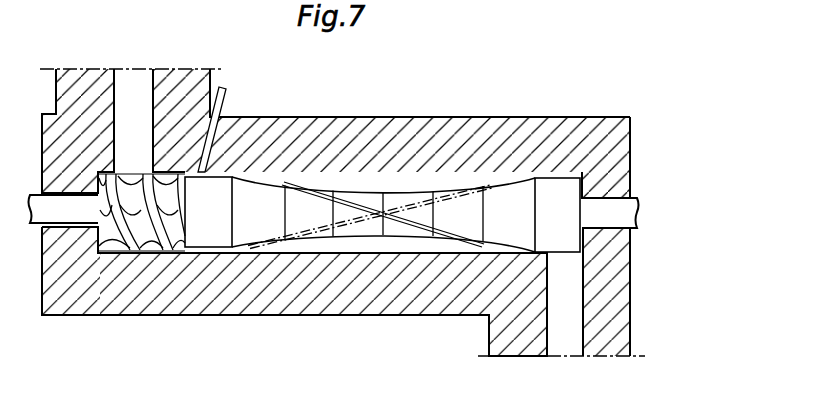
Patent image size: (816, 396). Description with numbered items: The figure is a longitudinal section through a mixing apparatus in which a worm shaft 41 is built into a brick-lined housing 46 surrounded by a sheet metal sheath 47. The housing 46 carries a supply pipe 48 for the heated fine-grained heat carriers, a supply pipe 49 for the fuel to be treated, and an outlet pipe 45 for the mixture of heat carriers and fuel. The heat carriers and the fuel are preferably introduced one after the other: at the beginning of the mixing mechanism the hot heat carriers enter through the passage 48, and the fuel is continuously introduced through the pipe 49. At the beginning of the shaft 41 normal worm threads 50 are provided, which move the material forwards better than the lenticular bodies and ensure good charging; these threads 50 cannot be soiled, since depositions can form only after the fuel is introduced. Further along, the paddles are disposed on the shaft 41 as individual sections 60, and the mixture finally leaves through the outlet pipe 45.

The worm shaft 41 is at (602, 208).
The outlet pipe 45 is at (560, 346).
The brick-lined housing 46 is at (412, 125).
The sheet metal sheath 47 is at (487, 117).
The supply pipe for heated heat carriers 48 is at (134, 20).
The supply pipe for fuel 49 is at (238, 38).
The worm threads 50 is at (128, 181).
The paddle sections 60 is at (295, 197).